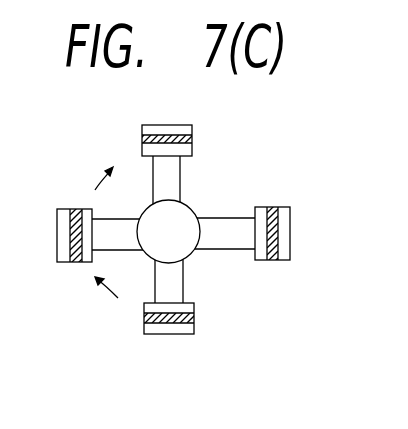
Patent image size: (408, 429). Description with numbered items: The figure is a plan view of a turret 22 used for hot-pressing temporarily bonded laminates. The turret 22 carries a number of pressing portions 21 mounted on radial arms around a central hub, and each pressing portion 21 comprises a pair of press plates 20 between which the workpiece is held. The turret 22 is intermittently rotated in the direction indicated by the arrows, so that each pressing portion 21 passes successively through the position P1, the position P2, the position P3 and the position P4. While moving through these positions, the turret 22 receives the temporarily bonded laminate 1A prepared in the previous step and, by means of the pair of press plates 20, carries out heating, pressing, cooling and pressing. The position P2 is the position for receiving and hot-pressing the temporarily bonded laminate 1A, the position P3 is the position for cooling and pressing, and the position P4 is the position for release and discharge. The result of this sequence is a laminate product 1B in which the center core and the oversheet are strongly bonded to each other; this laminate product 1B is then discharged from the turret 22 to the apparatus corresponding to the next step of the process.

The temporarily bonded laminate 1A is at (200, 181).
The laminate product 1B is at (194, 320).
The press plates 20 is at (193, 133).
The pressing portion 21 is at (135, 124).
The turret 22 is at (217, 218).
The position P1 is at (58, 237).
The position P2 is at (167, 106).
The position P3 is at (311, 234).
The position P4 is at (166, 355).